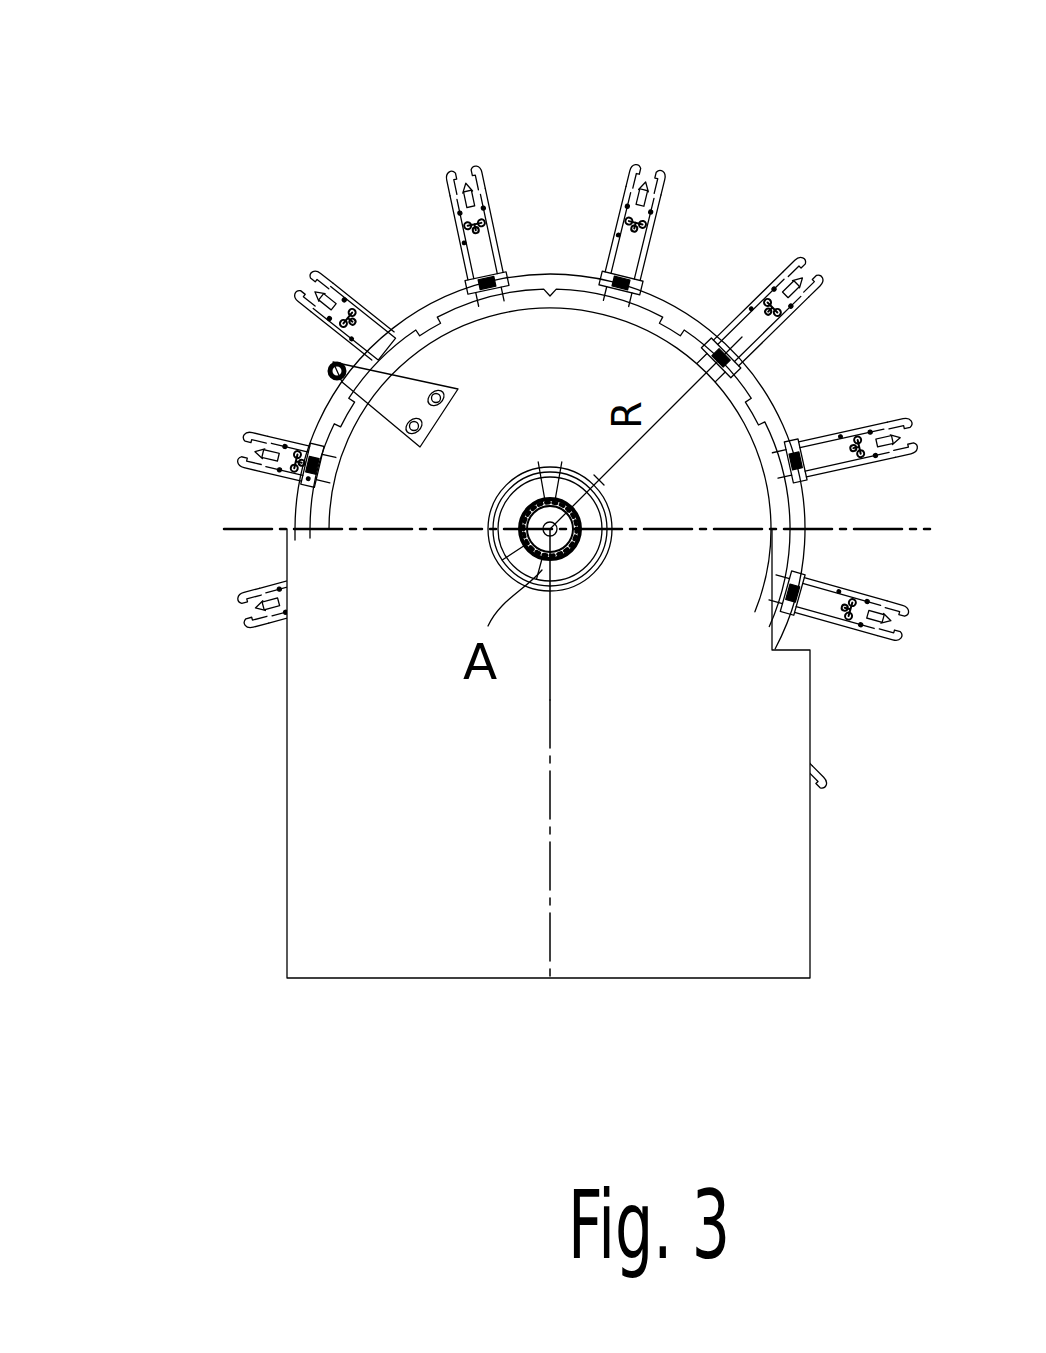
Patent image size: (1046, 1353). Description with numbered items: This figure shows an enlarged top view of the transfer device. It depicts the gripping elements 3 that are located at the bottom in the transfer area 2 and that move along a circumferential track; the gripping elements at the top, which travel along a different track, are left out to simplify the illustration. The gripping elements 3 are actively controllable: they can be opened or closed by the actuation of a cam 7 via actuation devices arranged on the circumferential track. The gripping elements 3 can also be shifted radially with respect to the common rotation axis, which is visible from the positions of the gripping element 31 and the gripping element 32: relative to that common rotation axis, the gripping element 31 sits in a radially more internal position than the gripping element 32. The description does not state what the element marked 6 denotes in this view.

The transfer area 2 is at (643, 360).
The gripping element 3 is at (347, 307).
The support ring 6 is at (547, 273).
The cam 7 is at (810, 437).
The gripping element 31 is at (258, 465).
The gripping element 32 is at (450, 200).